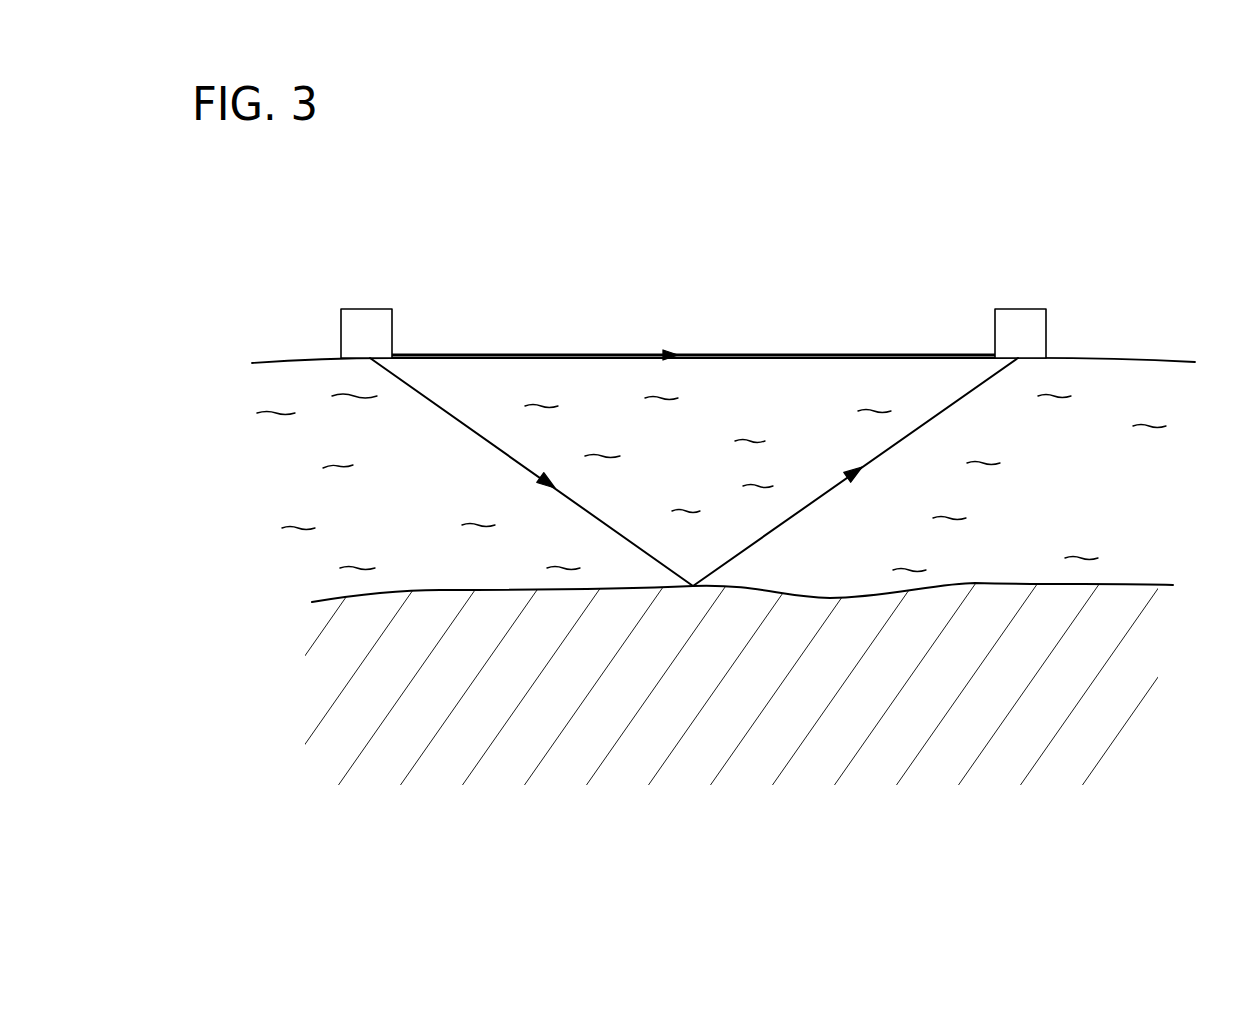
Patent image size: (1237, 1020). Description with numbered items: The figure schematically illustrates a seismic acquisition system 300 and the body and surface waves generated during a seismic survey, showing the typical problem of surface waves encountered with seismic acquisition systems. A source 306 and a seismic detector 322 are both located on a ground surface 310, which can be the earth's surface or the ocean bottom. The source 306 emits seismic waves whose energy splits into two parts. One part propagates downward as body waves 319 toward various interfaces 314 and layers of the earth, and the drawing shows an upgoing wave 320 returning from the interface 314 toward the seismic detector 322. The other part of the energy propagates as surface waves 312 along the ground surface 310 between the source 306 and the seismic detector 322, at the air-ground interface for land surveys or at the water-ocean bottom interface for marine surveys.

The seismic acquisition system 300 is at (858, 134).
The source 306 is at (375, 309).
The ground surface 310 is at (1132, 357).
The surface waves 312 is at (742, 355).
The interfaces 314 is at (1017, 584).
The body waves 319 is at (507, 455).
The reflected upgoing seismic wave 320 is at (797, 515).
The seismic detector 322 is at (1013, 309).